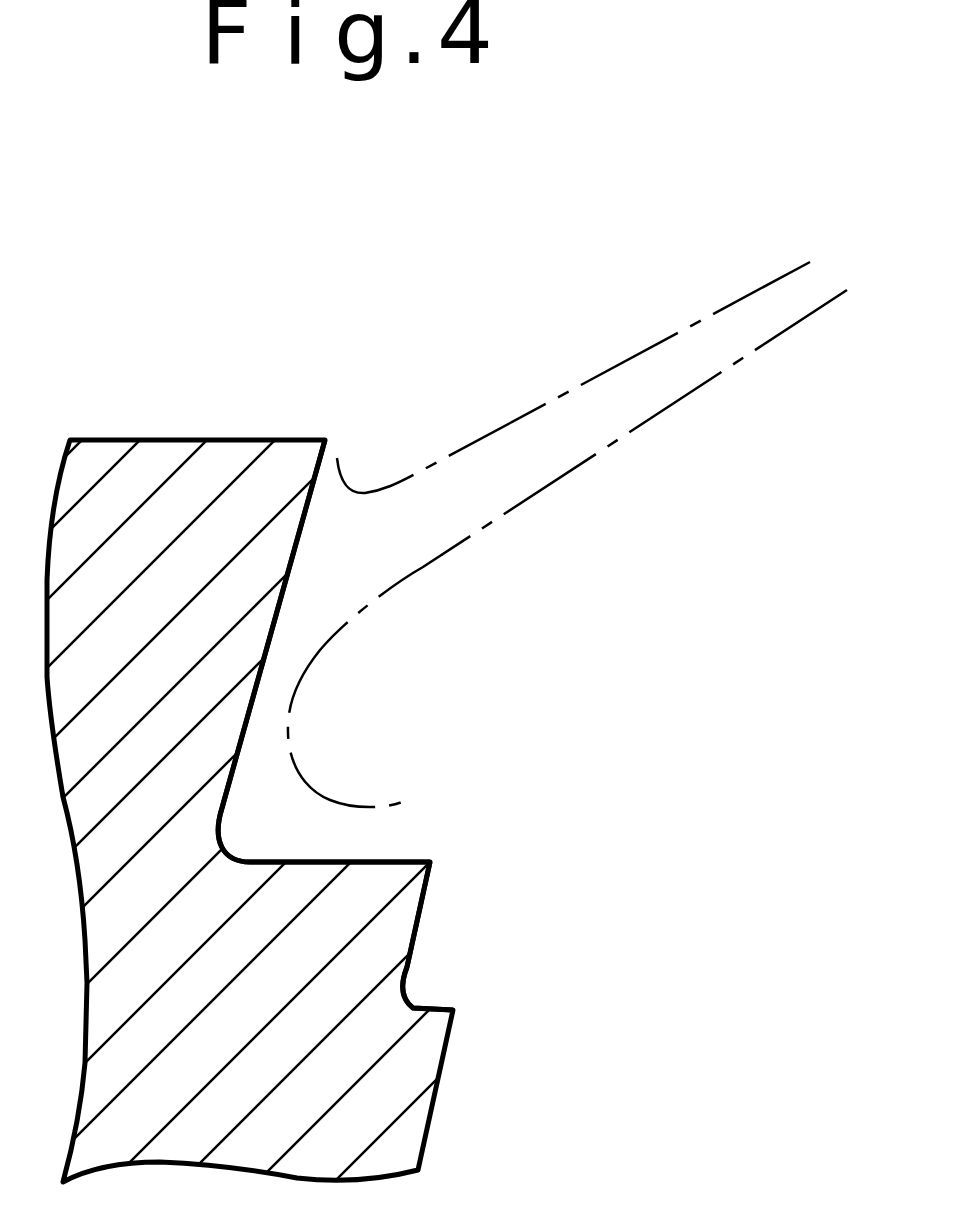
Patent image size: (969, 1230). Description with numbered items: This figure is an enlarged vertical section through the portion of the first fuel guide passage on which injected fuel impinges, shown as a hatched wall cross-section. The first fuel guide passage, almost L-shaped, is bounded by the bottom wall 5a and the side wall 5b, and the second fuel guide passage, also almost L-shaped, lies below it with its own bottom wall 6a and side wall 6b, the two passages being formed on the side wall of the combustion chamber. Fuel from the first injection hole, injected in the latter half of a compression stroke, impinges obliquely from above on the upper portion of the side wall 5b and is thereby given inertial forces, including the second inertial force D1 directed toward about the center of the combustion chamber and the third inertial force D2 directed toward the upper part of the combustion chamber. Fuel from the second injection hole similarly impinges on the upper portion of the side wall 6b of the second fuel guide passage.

The bottom wall 5a is at (398, 842).
The side wall 5b is at (318, 526).
The bottom wall 6a is at (444, 990).
The side wall 6b is at (436, 912).
The second inertial force D1 is at (437, 838).
The third inertial force D2 is at (337, 455).